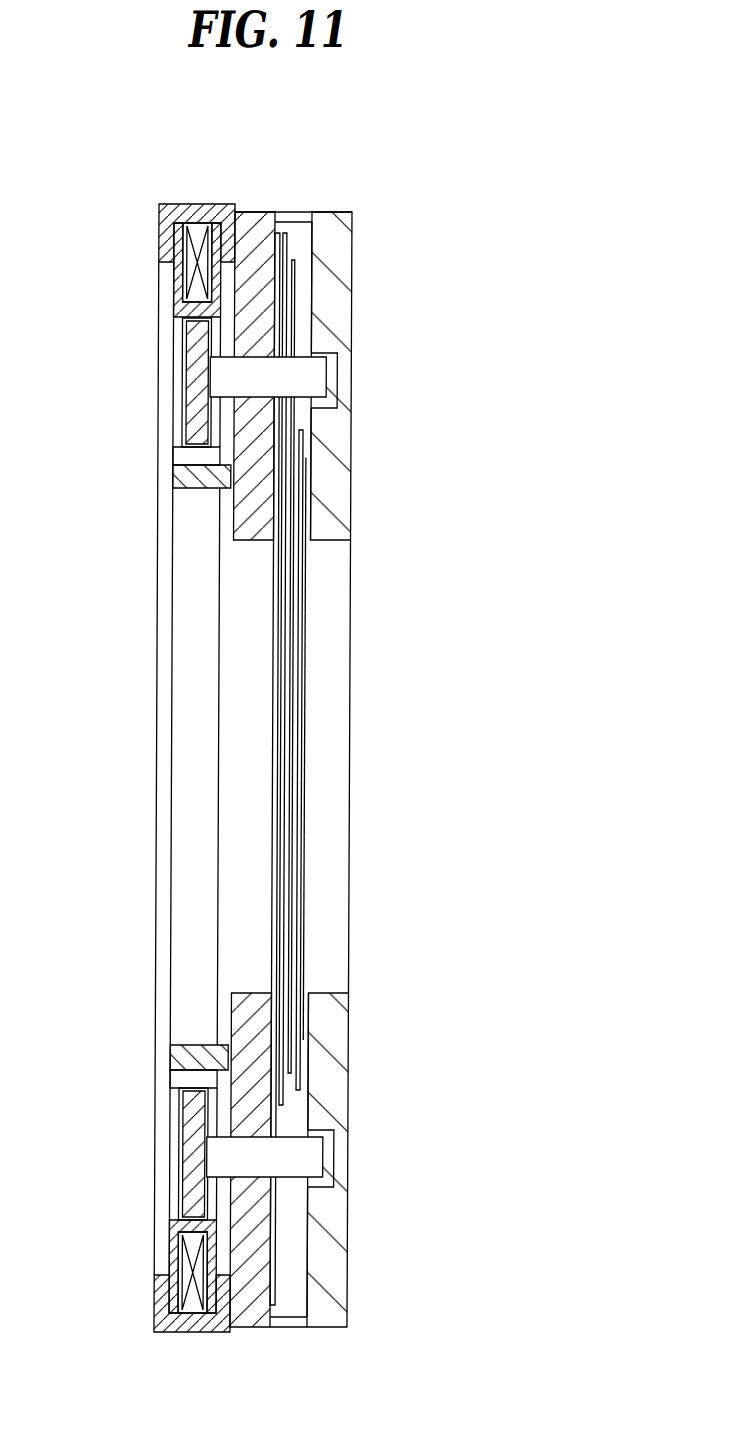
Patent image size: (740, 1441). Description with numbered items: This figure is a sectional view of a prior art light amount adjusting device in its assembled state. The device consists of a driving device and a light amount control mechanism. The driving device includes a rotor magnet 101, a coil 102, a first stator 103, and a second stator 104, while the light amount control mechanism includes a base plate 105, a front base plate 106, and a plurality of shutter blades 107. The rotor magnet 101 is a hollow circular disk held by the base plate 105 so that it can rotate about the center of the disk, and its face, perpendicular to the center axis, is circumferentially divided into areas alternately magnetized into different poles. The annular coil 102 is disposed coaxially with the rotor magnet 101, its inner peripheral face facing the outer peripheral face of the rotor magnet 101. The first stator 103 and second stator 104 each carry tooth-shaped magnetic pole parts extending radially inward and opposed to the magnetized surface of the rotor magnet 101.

The rotor magnet 101 is at (188, 392).
The coil 102 is at (190, 272).
The first stator 103 is at (226, 203).
The second stator 104 is at (172, 321).
The base plate 105 is at (255, 242).
The front base plate 106 is at (336, 244).
The shutter blades 107 is at (314, 736).